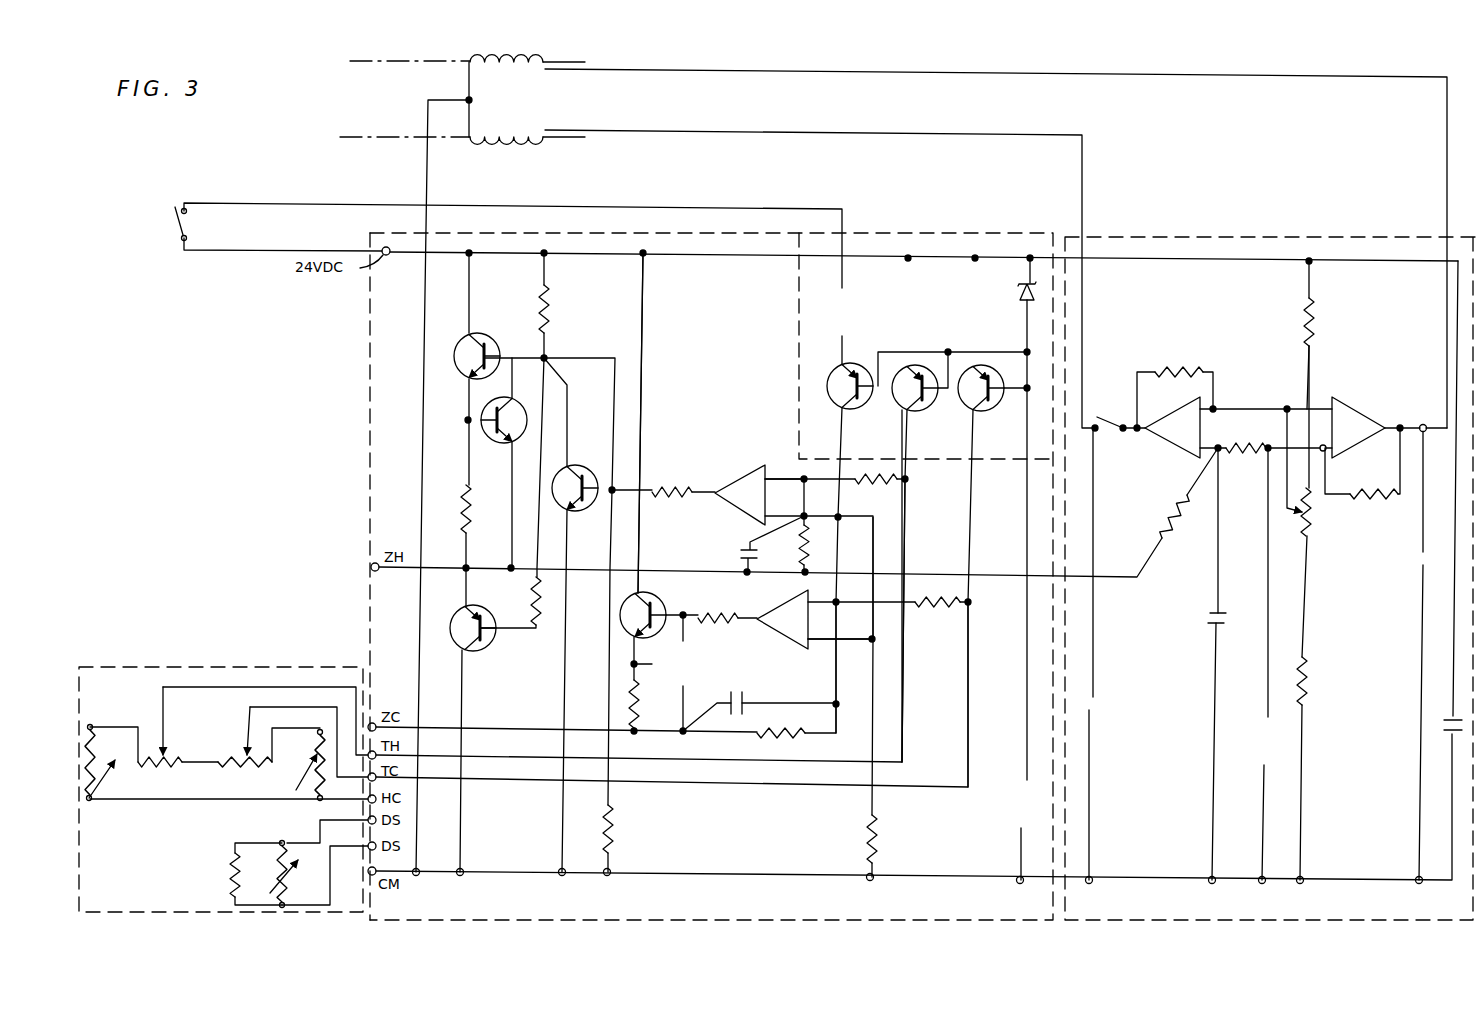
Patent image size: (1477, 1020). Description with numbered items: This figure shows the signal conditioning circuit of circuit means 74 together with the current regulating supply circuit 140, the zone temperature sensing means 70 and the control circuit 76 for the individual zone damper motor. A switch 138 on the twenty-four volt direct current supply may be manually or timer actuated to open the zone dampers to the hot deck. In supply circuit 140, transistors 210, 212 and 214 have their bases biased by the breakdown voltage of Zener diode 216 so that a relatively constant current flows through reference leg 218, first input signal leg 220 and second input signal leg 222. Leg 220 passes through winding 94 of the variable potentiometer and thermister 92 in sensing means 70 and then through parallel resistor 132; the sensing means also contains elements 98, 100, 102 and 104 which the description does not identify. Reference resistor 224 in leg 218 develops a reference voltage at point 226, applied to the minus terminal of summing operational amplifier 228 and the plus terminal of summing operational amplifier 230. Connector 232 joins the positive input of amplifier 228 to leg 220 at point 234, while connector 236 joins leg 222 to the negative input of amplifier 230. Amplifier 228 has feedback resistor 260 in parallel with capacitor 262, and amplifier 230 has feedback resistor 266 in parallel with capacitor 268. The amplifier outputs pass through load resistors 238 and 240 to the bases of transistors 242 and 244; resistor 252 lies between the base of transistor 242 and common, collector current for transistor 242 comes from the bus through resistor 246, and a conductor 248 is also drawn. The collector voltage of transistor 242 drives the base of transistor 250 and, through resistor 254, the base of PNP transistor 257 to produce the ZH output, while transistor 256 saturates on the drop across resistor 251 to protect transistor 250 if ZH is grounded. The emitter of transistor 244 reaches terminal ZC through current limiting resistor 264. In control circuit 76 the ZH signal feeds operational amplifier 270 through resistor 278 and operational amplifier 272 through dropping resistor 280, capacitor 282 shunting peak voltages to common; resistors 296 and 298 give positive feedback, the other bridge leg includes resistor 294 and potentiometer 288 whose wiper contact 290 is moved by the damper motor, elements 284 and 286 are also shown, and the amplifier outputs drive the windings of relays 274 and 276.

The switch means 138 is at (177, 222).
The relay 276 is at (540, 42).
The relay 274 is at (545, 112).
The current regulating supply circuit 140 is at (1003, 232).
The circuit means 74 is at (372, 322).
The control circuit 76 is at (1246, 235).
The zone temperature sensing means 70 is at (185, 665).
The transistor 250 is at (484, 338).
The resistor 246 is at (550, 305).
The conductor 248 is at (644, 330).
The transistor 256 is at (488, 402).
The resistor 251 is at (462, 502).
The transistor 242 is at (598, 472).
The summing operational amplifier 228 is at (745, 470).
The connector 232 is at (780, 478).
The load resistor 238 is at (672, 500).
The capacitor 262 is at (742, 552).
The resistor 260 is at (808, 546).
The point 234 is at (907, 484).
The transistor 210 is at (855, 366).
The transistor 212 is at (925, 410).
The transistor 214 is at (990, 410).
The Zener diode 216 is at (1020, 294).
The reference leg 218 is at (878, 540).
The connector 236 is at (912, 605).
The point 226 is at (880, 640).
The first input signal leg 220 is at (904, 709).
The second input signal leg 222 is at (970, 709).
The transistor 244 is at (660, 592).
The load resistor 240 is at (725, 602).
The summing operational amplifier 230 is at (785, 638).
The capacitor 268 is at (746, 700).
The resistor 266 is at (780, 740).
The current limiting circuit resistor 264 is at (630, 700).
The transistor 257 is at (452, 630).
The resistor 254 is at (542, 620).
The resistor 252 is at (614, 832).
The reference resistor 224 is at (866, 830).
The resistor 298 is at (1195, 349).
The resistor 286 is at (1305, 322).
The conductor 284 is at (1307, 380).
The operational amplifier 272 is at (1360, 408).
The dropping resistor 280 is at (1248, 446).
The operational amplifier 270 is at (1178, 444).
The resistor 278 is at (1166, 520).
The wiper contact 290 is at (1288, 510).
The potentiometer 288 is at (1306, 525).
The resistor 296 is at (1352, 500).
The capacitor 282 is at (1212, 628).
The resistor 294 is at (1308, 680).
The thermister 92 is at (104, 776).
The wiper 104 is at (160, 728).
The winding of variable potentiometer 94 is at (180, 768).
The wiper 102 is at (246, 740).
The resistor 100 is at (245, 770).
The potentiometer 98 is at (305, 782).
The parallel resistor 132 is at (280, 855).